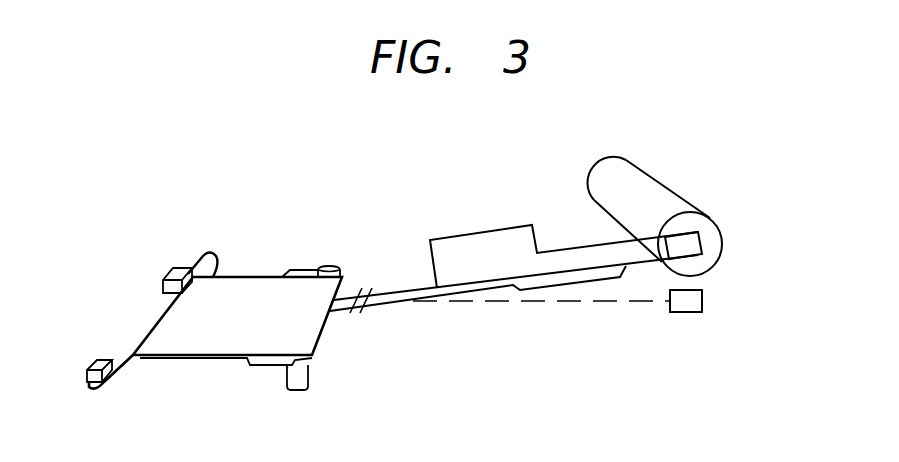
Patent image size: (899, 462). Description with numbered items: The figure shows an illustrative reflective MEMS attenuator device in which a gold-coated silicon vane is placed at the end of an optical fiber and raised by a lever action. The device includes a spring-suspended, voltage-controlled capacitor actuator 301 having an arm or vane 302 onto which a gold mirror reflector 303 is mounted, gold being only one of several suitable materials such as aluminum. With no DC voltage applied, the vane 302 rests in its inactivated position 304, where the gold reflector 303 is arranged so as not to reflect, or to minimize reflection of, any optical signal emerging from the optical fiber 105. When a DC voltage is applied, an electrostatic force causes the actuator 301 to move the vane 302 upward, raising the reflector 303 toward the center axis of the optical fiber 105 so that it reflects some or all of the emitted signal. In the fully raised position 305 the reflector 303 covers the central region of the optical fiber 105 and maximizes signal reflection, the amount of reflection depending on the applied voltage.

The spring-suspended capacitor actuator 301 is at (247, 296).
The vane 302 is at (480, 233).
The gold mirror reflector 303 is at (680, 246).
The inactivated position 304 is at (715, 302).
The fully raised position 305 is at (733, 247).
The optical fiber 105 is at (673, 193).